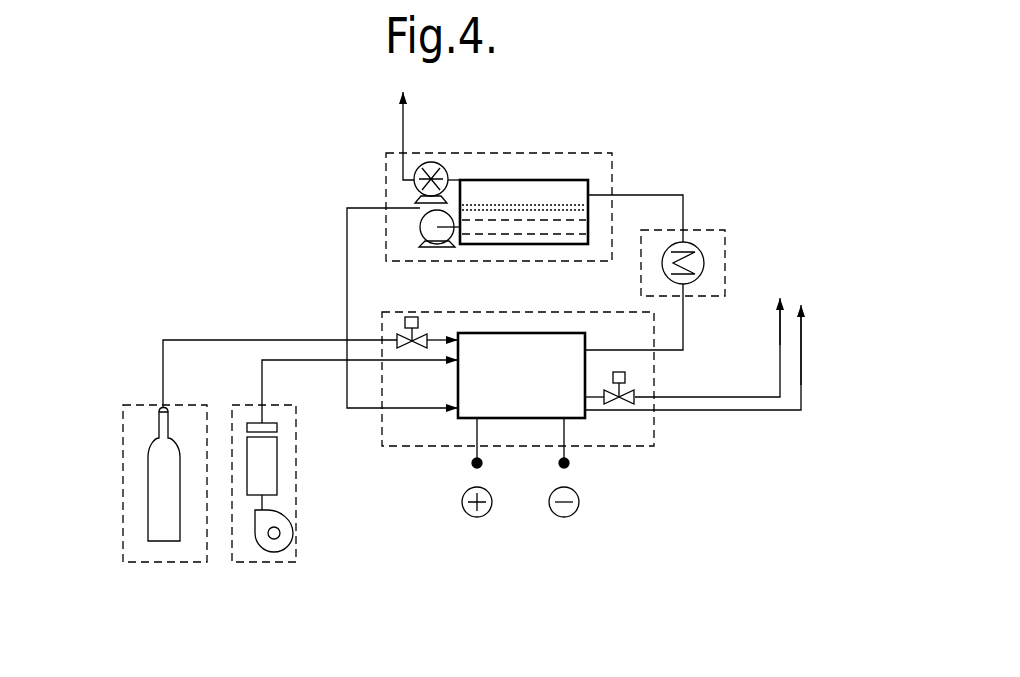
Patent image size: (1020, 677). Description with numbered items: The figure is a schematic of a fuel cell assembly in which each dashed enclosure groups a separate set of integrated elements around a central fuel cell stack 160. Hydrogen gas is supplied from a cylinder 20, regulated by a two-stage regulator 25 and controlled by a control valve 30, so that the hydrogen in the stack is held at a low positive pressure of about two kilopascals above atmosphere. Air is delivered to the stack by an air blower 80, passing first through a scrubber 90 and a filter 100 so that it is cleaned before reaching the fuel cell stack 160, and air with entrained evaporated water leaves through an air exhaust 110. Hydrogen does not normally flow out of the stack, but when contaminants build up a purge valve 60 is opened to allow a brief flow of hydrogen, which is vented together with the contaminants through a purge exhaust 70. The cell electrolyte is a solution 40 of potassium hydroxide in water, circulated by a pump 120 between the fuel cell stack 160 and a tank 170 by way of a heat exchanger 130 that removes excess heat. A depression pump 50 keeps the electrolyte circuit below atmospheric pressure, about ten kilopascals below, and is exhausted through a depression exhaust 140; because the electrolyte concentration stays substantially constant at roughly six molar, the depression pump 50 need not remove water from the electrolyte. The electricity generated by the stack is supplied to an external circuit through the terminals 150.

The cylinder 20 is at (153, 462).
The 2-stage regulator 25 is at (159, 418).
The control valve 30 is at (405, 321).
The solution 40 is at (568, 215).
The depression pump 50 is at (414, 178).
The purge valve 60 is at (625, 405).
The purge exhaust 70 is at (783, 343).
The air blower 80 is at (287, 546).
The scrubber 90 is at (262, 476).
The filter 100 is at (275, 428).
The air exhaust 110 is at (803, 383).
The pump 120 is at (400, 227).
The heat exchanger 130 is at (705, 261).
The depression exhaust 140 is at (403, 113).
The terminals 150 is at (484, 455).
The fuel cell stack 160 is at (500, 390).
The tank 170 is at (500, 239).